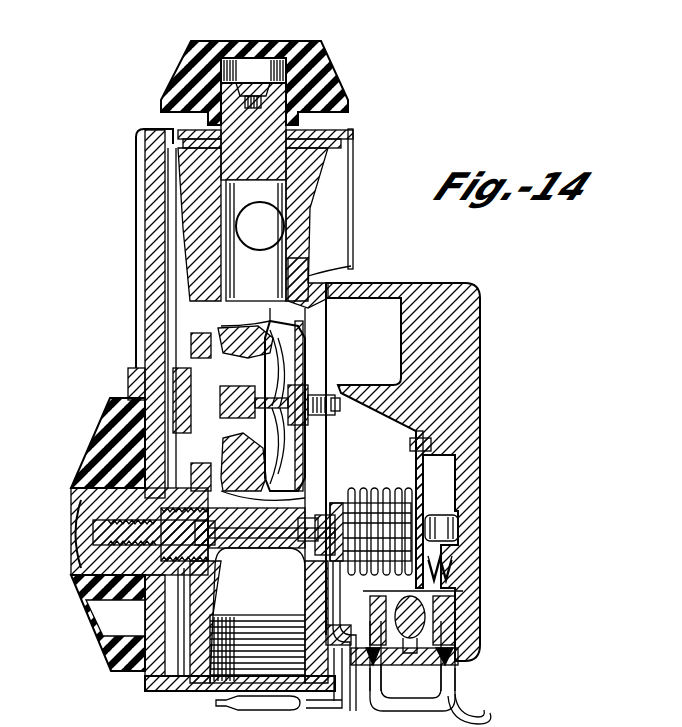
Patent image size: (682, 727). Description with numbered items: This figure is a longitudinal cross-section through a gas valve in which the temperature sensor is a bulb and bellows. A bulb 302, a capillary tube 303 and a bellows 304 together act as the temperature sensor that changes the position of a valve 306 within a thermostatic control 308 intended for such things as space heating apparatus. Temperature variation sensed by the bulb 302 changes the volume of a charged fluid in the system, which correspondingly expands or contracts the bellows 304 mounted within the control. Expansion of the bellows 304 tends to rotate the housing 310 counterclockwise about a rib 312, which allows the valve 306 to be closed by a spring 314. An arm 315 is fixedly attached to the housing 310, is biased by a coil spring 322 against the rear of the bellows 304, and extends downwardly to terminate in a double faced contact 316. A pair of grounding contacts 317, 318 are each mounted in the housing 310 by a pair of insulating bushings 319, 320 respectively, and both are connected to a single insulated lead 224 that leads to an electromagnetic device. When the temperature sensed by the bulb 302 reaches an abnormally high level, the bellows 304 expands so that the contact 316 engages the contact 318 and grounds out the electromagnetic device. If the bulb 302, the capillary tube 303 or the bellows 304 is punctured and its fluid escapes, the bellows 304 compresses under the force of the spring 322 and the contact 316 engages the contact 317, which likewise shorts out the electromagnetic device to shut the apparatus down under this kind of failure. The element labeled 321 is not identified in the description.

The insulated lead 224 is at (457, 708).
The bulb 302 is at (256, 703).
The capillary tube 303 is at (355, 698).
The bellows 304 is at (348, 483).
The valve 306 is at (214, 314).
The thermostatic control 308 is at (348, 173).
The housing 310 is at (472, 325).
The rib 312 is at (318, 275).
The spring 314 is at (157, 348).
The arm 315 is at (418, 480).
The double faced contact 316 is at (420, 588).
The grounding contact 317 is at (378, 590).
The grounding contact 318 is at (425, 612).
The insulating bushing 319 is at (378, 658).
The insulating bushing 320 is at (452, 660).
The tube bend 321 is at (380, 683).
The coil spring 322 is at (435, 565).